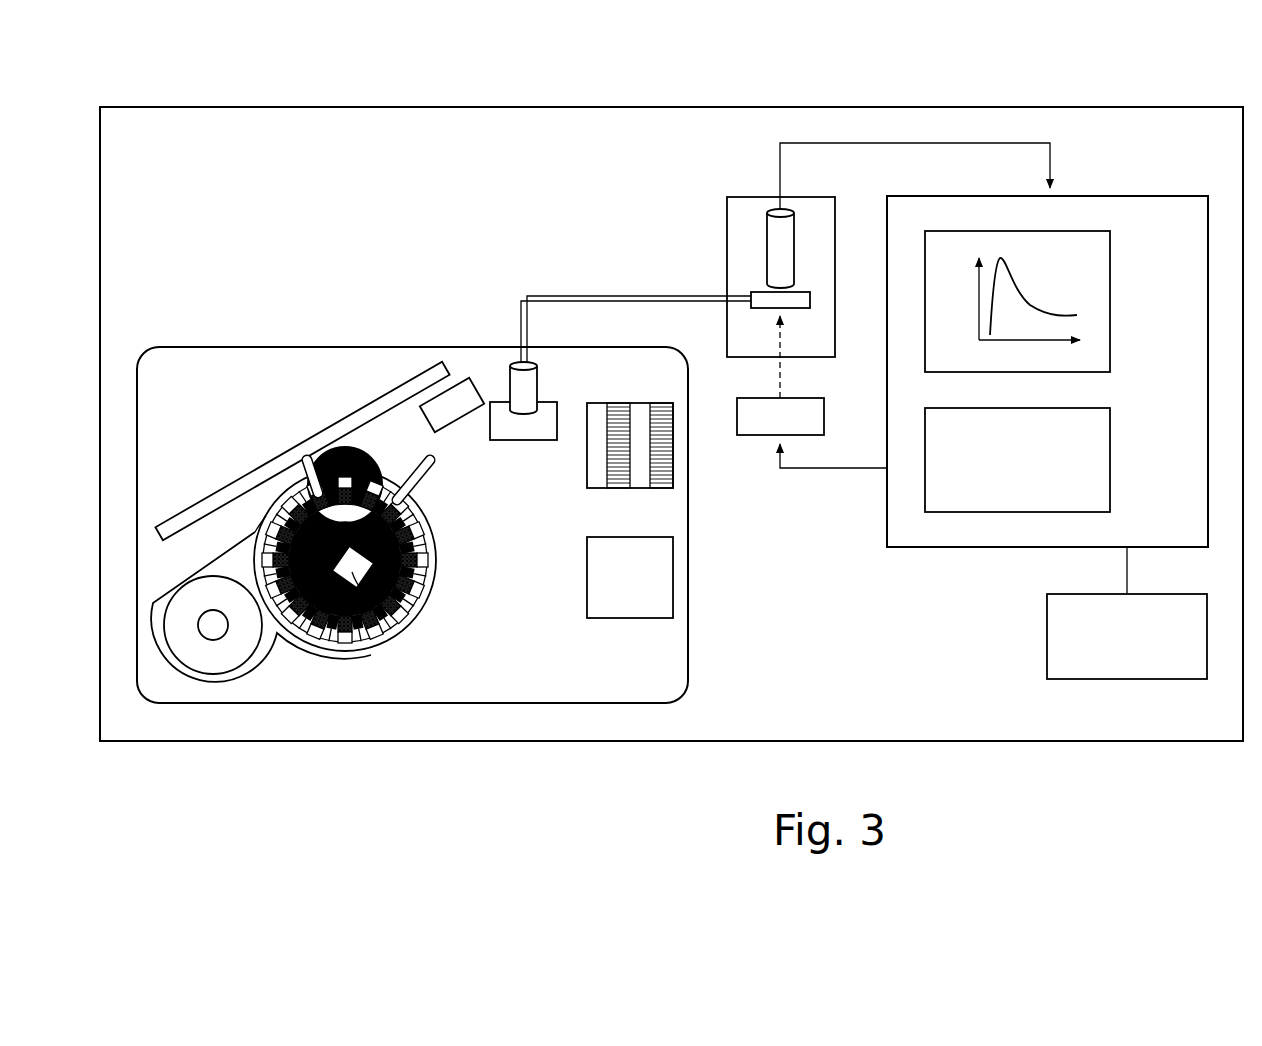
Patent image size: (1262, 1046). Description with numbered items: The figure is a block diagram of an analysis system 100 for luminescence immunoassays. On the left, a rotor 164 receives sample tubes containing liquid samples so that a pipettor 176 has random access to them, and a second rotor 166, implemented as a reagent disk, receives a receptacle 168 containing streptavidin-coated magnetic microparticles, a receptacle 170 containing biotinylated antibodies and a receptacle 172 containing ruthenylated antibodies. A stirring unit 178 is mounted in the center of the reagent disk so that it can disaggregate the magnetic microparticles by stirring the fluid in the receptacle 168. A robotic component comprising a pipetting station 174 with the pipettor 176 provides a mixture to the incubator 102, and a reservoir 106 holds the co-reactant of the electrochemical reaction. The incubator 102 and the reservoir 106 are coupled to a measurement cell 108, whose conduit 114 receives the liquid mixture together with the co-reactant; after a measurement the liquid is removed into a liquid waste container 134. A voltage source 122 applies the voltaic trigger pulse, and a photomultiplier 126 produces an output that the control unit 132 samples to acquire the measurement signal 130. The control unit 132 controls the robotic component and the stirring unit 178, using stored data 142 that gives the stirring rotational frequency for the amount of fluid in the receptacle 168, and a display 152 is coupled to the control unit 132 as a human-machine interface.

The analysis system 100 is at (1150, 107).
The incubator 102 is at (538, 385).
The reservoir 106 is at (587, 466).
The measurement cell 108 is at (837, 237).
The conduit 114 is at (794, 310).
The voltage source 122 is at (756, 436).
The photomultiplier 126 is at (765, 245).
The measurement signal 130 is at (1112, 271).
The control unit 132 is at (1113, 196).
The liquid waste container 134 is at (587, 568).
The data 142 is at (1112, 457).
The display 152 is at (1133, 680).
The rotor 164 is at (195, 655).
The second rotor 166 is at (284, 653).
The receptacle 168 is at (332, 650).
The receptacle 170 is at (357, 630).
The receptacle 172 is at (387, 633).
The pipetting station 174 is at (462, 388).
The pipettor 176 is at (330, 432).
The stirring unit 178 is at (352, 572).